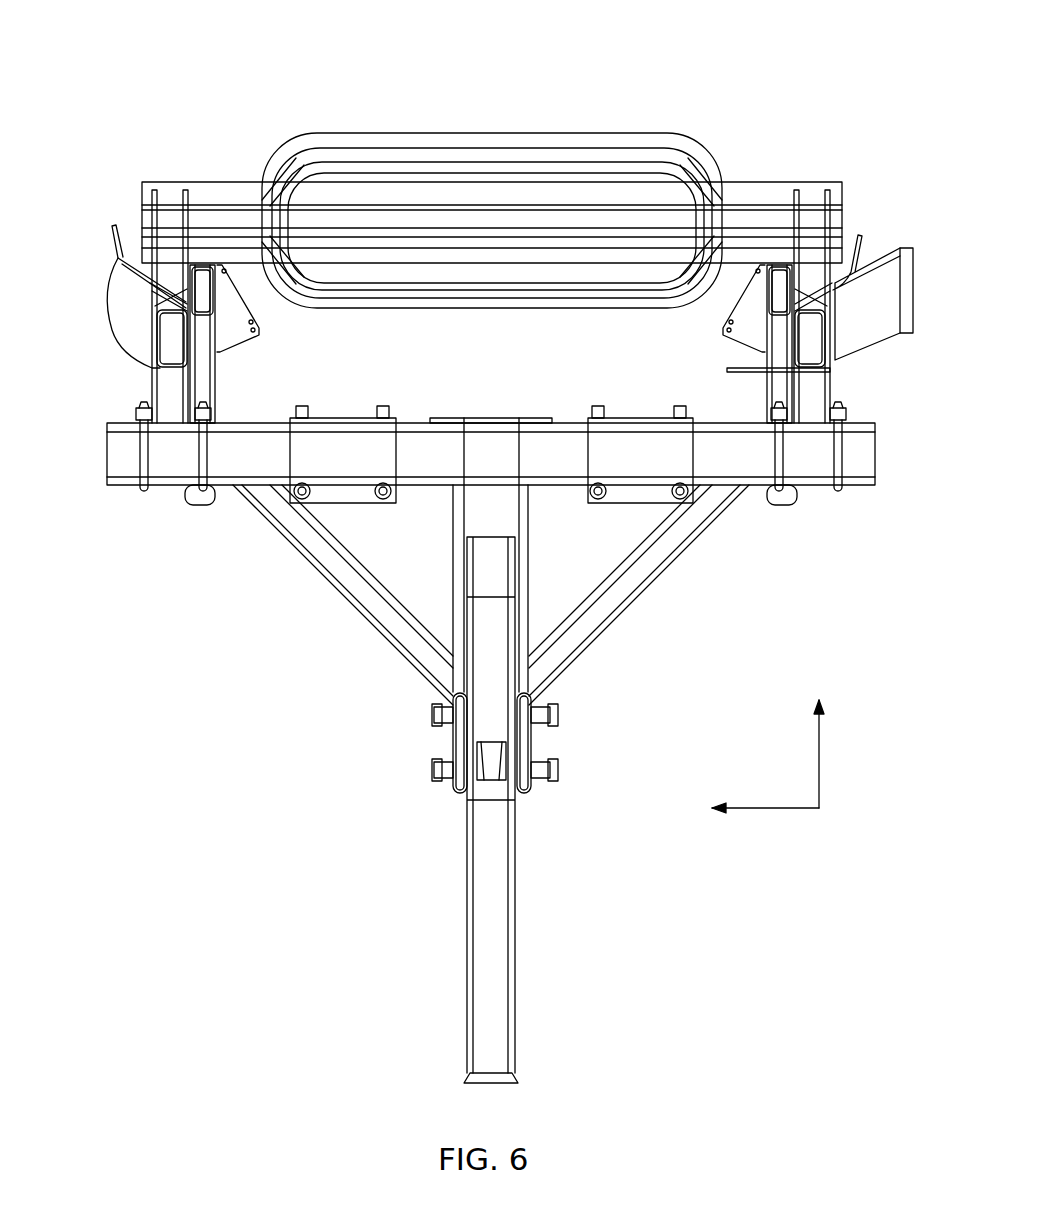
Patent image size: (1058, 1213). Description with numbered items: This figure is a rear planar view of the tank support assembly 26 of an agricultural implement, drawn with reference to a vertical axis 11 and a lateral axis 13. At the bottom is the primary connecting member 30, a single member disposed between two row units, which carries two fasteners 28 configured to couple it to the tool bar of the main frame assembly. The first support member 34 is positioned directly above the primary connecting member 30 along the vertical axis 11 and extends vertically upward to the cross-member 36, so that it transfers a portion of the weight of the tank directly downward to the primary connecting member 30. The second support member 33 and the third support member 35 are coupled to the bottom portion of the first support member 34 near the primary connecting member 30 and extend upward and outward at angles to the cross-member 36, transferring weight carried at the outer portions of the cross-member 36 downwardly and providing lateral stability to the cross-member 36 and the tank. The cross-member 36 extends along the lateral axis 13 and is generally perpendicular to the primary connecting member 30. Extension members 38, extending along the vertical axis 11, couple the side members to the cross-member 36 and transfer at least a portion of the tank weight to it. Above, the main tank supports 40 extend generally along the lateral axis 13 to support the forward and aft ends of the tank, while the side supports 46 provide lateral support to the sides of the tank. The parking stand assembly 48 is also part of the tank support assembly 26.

The tank support assembly 26 is at (697, 63).
The main tank support 40 is at (785, 182).
The side support 46 is at (125, 313).
The extension member 38 is at (155, 395).
The cross-member 36 is at (875, 455).
The first support member 34 is at (530, 565).
The third support member 35 is at (345, 595).
The second support member 33 is at (632, 590).
The fasteners 28 is at (558, 770).
The primary connecting member 30 is at (530, 793).
The parking stand assembly 48 is at (447, 870).
The vertical axis 11 is at (822, 762).
The lateral axis 13 is at (770, 808).